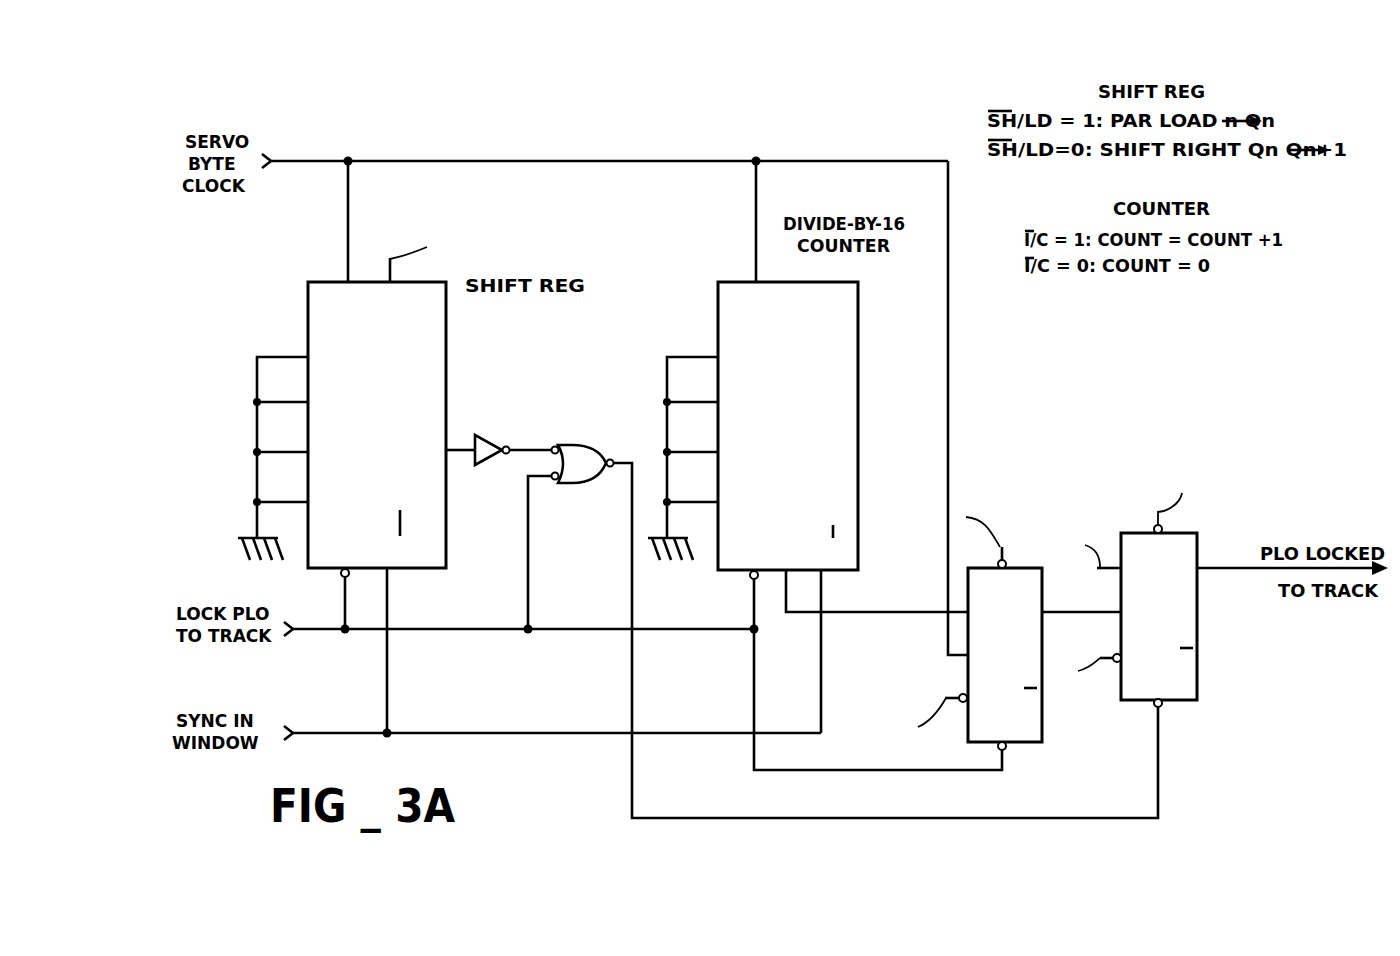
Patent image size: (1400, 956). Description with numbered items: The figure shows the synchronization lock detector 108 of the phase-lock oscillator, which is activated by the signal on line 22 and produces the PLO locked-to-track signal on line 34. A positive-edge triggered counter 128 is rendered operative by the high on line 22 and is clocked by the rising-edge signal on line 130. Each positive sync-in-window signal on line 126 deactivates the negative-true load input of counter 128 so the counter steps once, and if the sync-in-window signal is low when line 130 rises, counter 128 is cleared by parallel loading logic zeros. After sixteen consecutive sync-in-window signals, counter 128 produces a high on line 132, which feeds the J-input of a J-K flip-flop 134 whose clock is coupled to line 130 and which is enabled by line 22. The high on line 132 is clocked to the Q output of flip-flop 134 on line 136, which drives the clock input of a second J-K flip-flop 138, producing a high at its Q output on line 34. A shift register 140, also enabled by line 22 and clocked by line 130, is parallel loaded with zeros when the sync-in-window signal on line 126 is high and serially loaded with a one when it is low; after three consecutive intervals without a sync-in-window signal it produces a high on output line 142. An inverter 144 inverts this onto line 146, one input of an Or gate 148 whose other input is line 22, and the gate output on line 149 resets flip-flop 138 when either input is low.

The line 130 is at (313, 161).
The shift register 140 is at (311, 281).
The synchronization lock detector 108 is at (228, 420).
The output line 142 is at (462, 450).
The inverter 144 is at (481, 466).
The line 146 is at (535, 449).
The Or gate 148 is at (574, 484).
The line 149 is at (624, 461).
The positive-edge triggered counter 128 is at (860, 320).
The line 132 is at (876, 620).
The J-K flip-flop 134 is at (1029, 567).
The line 136 is at (1075, 612).
The J-K flip-flop 138 is at (1200, 546).
The line 34 is at (1222, 571).
The line 22 is at (320, 632).
The line 126 is at (343, 731).